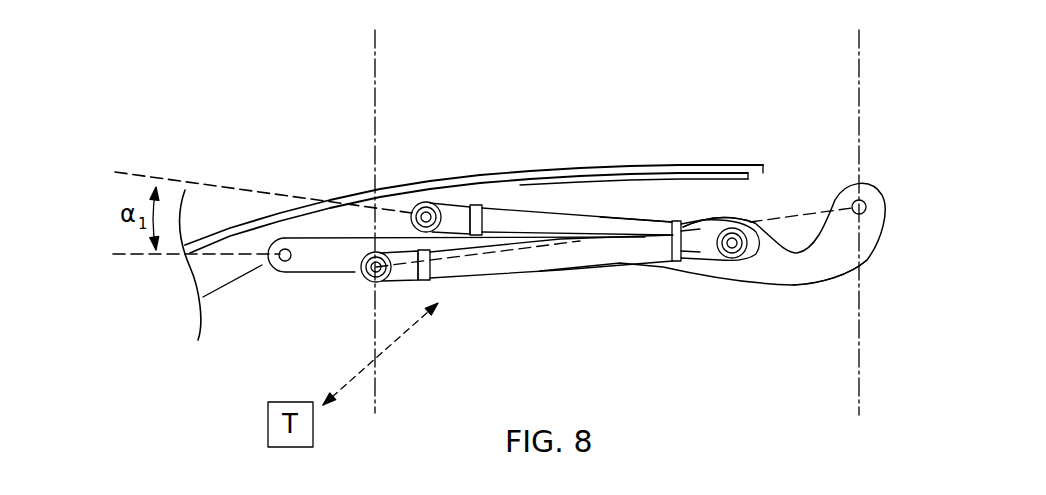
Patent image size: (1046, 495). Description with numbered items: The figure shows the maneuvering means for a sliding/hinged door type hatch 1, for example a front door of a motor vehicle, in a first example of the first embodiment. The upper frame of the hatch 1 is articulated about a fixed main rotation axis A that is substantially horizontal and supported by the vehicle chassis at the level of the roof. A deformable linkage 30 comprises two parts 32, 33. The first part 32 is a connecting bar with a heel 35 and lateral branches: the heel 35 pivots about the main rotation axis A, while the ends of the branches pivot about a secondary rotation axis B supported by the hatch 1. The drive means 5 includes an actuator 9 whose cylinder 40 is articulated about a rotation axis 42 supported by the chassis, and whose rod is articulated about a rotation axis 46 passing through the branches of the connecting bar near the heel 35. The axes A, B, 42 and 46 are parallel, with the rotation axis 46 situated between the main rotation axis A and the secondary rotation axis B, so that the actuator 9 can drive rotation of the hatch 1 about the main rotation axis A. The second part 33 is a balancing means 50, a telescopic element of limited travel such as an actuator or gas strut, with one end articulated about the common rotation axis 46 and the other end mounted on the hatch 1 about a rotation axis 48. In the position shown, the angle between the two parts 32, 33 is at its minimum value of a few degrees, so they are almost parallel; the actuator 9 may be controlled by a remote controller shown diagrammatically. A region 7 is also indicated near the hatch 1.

The hatch 1 is at (363, 185).
The drive means 5 is at (627, 275).
The gap / hinge region 7 is at (692, 208).
The actuator 9 is at (568, 275).
The deformable linkage 30 is at (585, 202).
The first part 32 is at (770, 285).
The second part 33 is at (532, 205).
The heel 35 is at (832, 282).
The cylinder 40 is at (476, 280).
The rotation axis 42 is at (365, 280).
The rotation axis 46 is at (736, 240).
The rotation axis 48 is at (427, 212).
The balancing means 50 is at (620, 218).
The main rotation axis A is at (861, 203).
The secondary rotation axis B is at (287, 247).